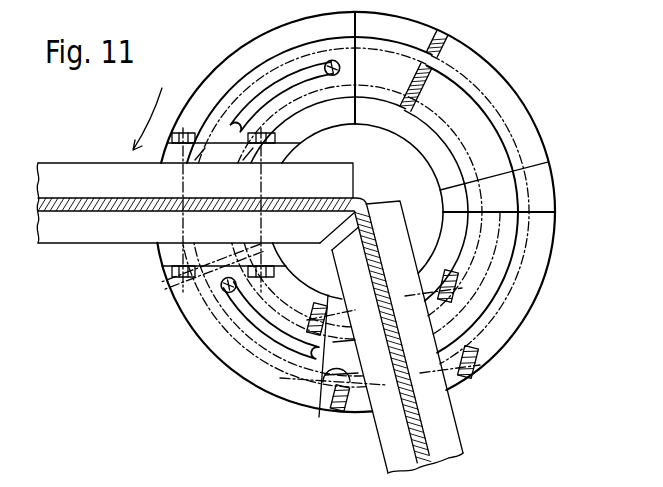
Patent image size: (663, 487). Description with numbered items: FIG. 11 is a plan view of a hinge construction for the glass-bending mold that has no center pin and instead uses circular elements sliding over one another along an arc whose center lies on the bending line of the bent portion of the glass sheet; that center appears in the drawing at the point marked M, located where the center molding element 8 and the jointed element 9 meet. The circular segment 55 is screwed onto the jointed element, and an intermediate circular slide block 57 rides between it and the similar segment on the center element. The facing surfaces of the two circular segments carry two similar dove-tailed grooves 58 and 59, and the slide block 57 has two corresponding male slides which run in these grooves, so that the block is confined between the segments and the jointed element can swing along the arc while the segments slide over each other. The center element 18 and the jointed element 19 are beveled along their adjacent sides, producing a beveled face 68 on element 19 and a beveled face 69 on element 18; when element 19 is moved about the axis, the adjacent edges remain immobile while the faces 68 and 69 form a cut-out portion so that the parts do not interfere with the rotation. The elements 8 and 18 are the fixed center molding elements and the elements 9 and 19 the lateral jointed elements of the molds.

The center molding element 8 is at (452, 440).
The lateral jointed molding element 9 is at (89, 152).
The center molding element 18 is at (395, 448).
The lateral jointed element 19 is at (86, 233).
The circular segment 55 is at (215, 88).
The intermediate circular slide block 57 is at (472, 112).
The dove-tailed groove 58 is at (269, 51).
The dove-tailed groove 59 is at (512, 264).
The beveled face 68 is at (330, 233).
The beveled face 69 is at (340, 236).
The center point M is at (367, 205).